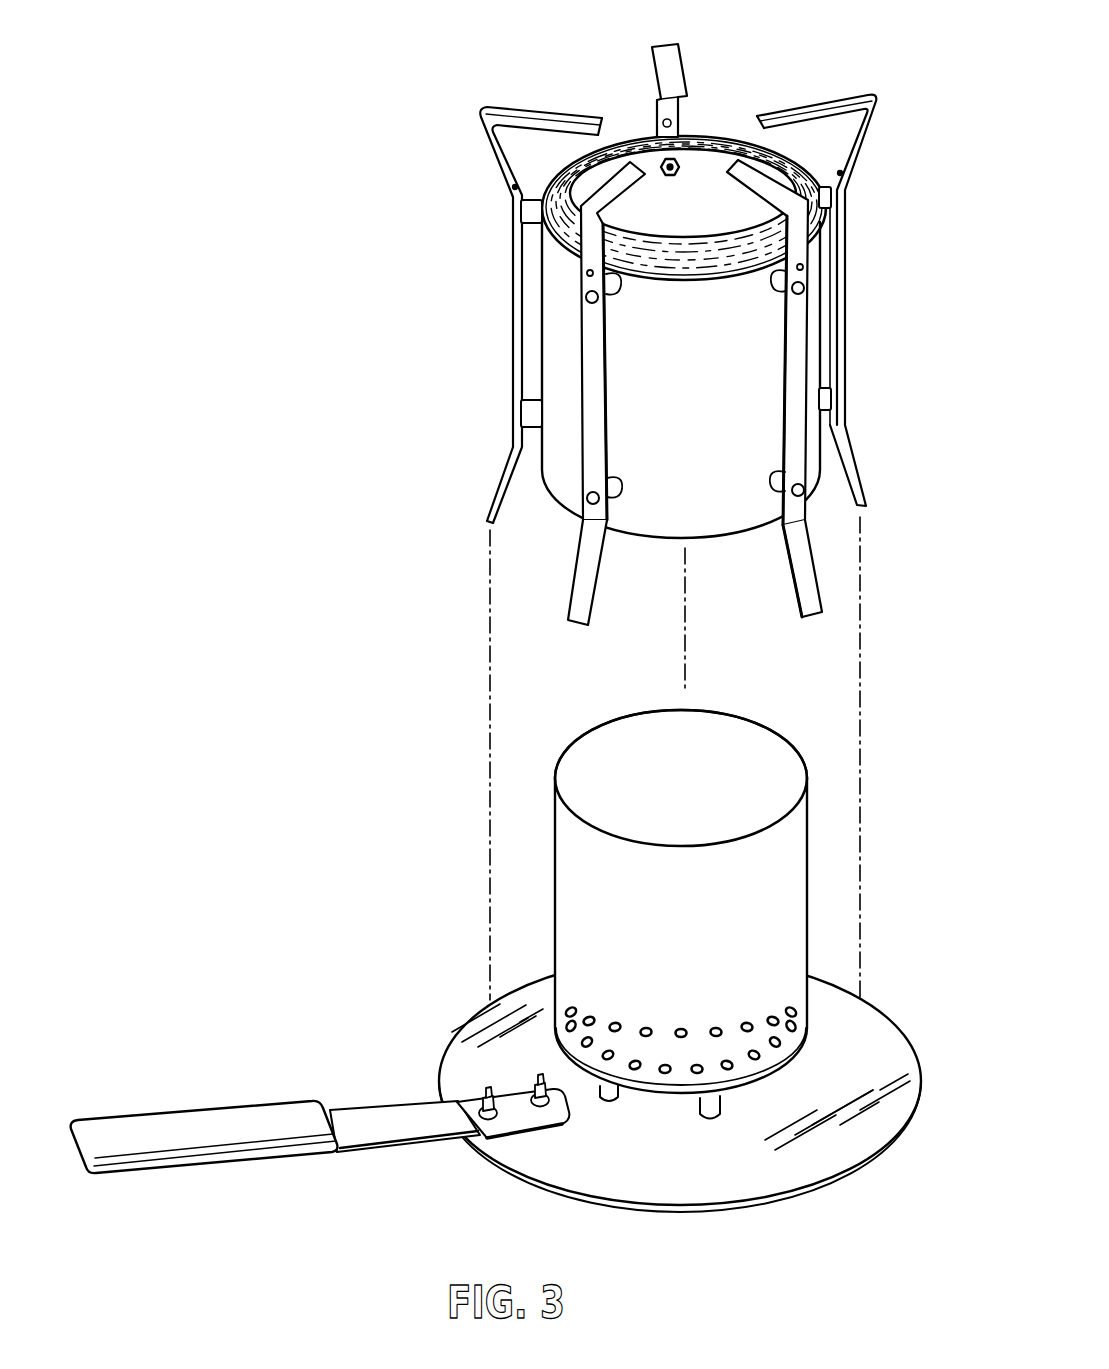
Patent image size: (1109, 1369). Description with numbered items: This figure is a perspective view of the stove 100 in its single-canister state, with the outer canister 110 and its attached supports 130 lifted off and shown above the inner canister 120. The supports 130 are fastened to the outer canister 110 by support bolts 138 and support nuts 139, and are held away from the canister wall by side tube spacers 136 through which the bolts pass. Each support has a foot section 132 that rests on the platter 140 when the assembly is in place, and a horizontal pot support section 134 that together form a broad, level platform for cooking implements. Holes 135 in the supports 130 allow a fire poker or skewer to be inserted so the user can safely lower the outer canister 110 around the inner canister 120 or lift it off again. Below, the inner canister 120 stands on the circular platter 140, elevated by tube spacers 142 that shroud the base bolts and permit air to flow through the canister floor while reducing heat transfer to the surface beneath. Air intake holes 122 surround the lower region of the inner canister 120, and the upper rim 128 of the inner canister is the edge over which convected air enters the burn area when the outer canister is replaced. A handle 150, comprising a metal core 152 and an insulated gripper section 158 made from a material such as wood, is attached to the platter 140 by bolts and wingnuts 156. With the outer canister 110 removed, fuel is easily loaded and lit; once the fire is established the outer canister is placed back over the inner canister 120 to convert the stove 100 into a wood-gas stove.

The stove 100 is at (200, 124).
The outer canister 110 is at (703, 124).
The inner canister 120 is at (835, 831).
The air intake holes 122 is at (760, 1062).
The upper rim of inner canister 128 is at (620, 718).
The support 130 is at (504, 298).
The foot section of support 132 is at (490, 505).
The horizontal pot support section 134 is at (590, 120).
The holes in supports 135 is at (846, 165).
The side tube spacers 136 is at (533, 209).
The support bolts 138 is at (530, 410).
The support nuts 139 is at (681, 169).
The platter 140 is at (906, 1002).
The tube spacers 142 is at (612, 1100).
The handle 150 is at (343, 1093).
The metal core of handle 152 is at (405, 1128).
The wingnuts 156 is at (537, 1090).
The insulated gripper section of handle 158 is at (195, 1120).